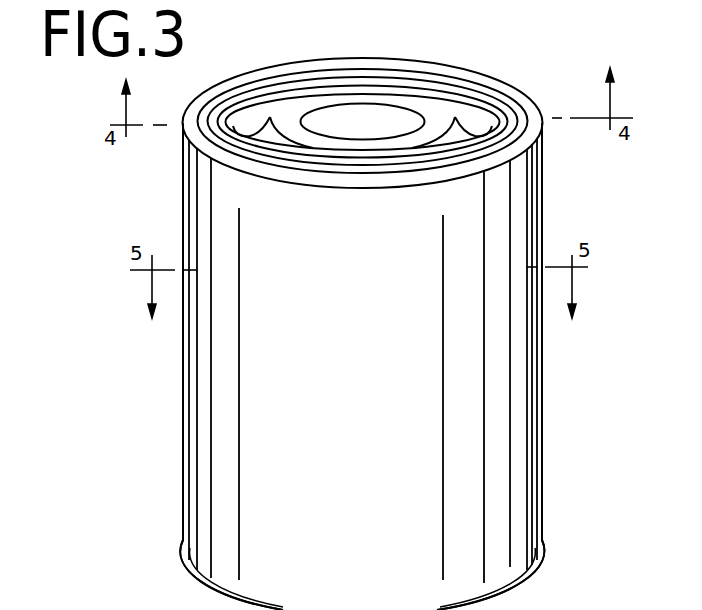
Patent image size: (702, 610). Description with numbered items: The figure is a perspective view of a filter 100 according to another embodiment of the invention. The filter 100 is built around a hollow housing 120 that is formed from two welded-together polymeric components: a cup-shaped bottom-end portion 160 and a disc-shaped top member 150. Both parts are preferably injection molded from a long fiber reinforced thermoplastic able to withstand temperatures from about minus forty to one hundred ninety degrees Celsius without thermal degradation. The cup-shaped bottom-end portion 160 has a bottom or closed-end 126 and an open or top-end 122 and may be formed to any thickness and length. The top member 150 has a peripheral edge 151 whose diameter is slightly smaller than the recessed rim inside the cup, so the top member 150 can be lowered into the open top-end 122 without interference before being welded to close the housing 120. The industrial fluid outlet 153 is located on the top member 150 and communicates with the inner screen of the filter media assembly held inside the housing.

The filter 100 is at (167, 377).
The hollow housing 120 is at (543, 422).
The open or top-end 122 is at (542, 187).
The bottom or closed-end 126 is at (543, 520).
The top member 150 is at (317, 110).
The peripheral edge 151 is at (497, 87).
The industrial fluid outlet 153 is at (370, 120).
The cup-shaped bottom-end portion 160 is at (183, 487).